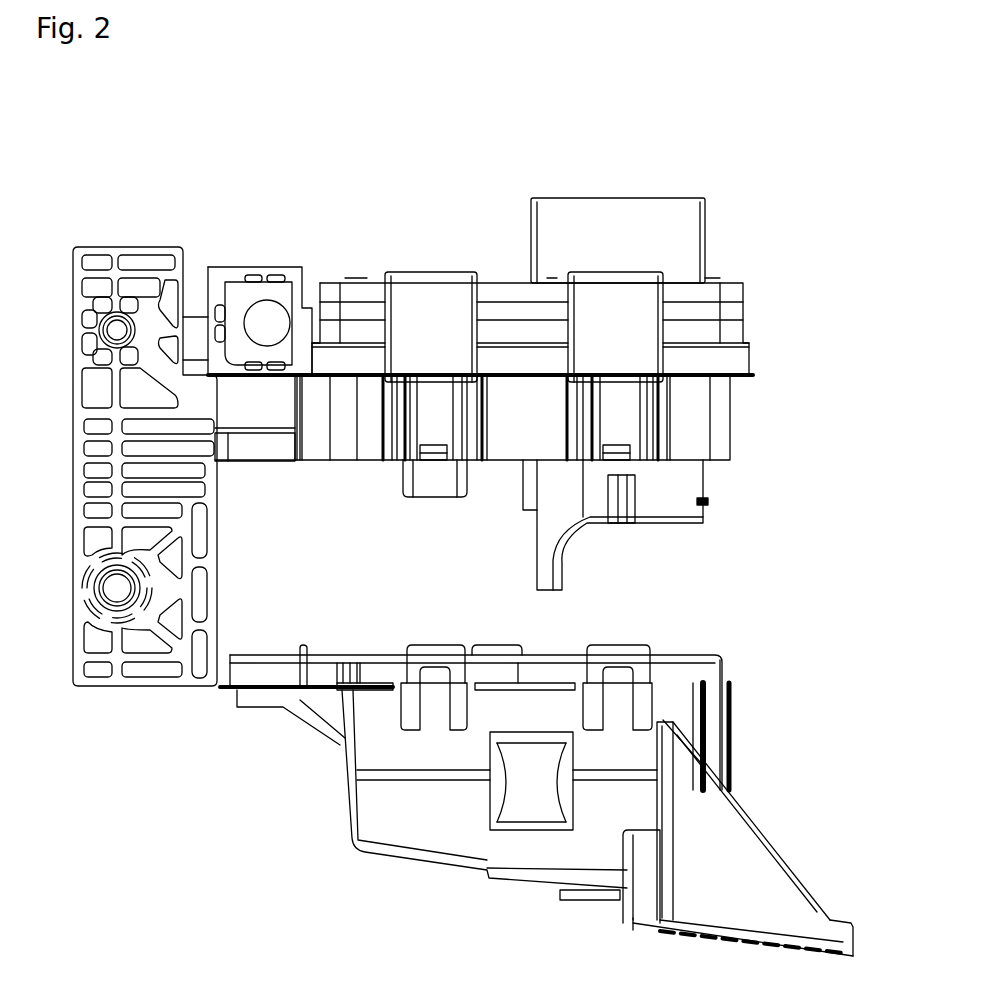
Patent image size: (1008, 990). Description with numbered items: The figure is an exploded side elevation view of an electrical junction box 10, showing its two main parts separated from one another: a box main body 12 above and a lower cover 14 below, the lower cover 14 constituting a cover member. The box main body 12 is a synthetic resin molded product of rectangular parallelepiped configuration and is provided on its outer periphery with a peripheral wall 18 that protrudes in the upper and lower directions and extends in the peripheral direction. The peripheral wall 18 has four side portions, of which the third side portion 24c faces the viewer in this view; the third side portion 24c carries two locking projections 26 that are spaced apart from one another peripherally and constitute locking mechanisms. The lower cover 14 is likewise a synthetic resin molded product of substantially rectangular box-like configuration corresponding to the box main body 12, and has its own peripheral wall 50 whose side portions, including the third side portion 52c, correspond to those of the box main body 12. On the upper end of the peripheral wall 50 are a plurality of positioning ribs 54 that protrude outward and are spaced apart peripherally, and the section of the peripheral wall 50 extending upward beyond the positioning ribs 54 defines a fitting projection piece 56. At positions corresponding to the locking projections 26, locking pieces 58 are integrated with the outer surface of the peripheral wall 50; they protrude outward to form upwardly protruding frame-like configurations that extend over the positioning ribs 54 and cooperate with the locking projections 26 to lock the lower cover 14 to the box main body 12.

The electrical junction box 10 is at (815, 158).
The box main body 12 is at (743, 263).
The lower cover 14 is at (753, 618).
The peripheral wall 18 is at (472, 483).
The third side portion 24c is at (698, 412).
The locking projection 26 is at (432, 455).
The peripheral wall 50 is at (597, 823).
The third side portion 52c is at (433, 755).
The positioning rib 54 is at (550, 683).
The fitting projection piece 56 is at (693, 670).
The locking piece 58 is at (303, 650).